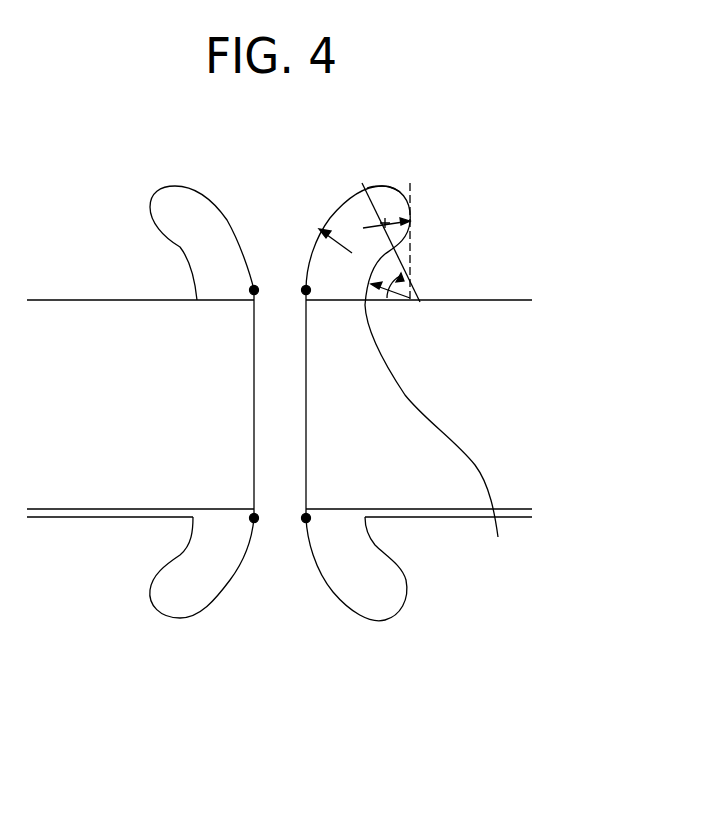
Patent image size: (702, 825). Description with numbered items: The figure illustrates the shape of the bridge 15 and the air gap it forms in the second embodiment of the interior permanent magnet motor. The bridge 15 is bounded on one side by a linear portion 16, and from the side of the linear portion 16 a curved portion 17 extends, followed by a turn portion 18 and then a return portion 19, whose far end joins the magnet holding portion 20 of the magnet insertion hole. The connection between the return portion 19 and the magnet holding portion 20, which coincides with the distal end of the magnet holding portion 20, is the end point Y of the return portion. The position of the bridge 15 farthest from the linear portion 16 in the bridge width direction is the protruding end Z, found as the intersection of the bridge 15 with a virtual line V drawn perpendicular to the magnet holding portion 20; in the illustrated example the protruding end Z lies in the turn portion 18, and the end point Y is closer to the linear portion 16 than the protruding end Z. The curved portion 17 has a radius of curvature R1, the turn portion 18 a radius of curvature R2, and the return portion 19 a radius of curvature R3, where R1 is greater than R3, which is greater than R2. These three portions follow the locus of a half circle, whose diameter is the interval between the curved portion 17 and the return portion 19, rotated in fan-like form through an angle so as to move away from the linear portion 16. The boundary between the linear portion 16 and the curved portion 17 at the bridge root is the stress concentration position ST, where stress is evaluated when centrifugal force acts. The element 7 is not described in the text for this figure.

The stator core 7 is at (77, 485).
The bridge 15 is at (306, 395).
The linear portion 16 is at (253, 447).
The curved portion 17 is at (330, 218).
The turn portion 18 is at (389, 187).
The return portion 19 is at (388, 254).
The magnet holding portion 20 is at (508, 298).
The stress concentration position ST is at (256, 288).
The virtual line V is at (413, 186).
The end point of the return portion Y is at (436, 434).
The protruding end Z is at (405, 219).
The radius of curvature of the curved portion R1 is at (340, 240).
The radius of curvature of the turn portion R2 is at (398, 207).
The radius of curvature of the return portion R3 is at (411, 290).